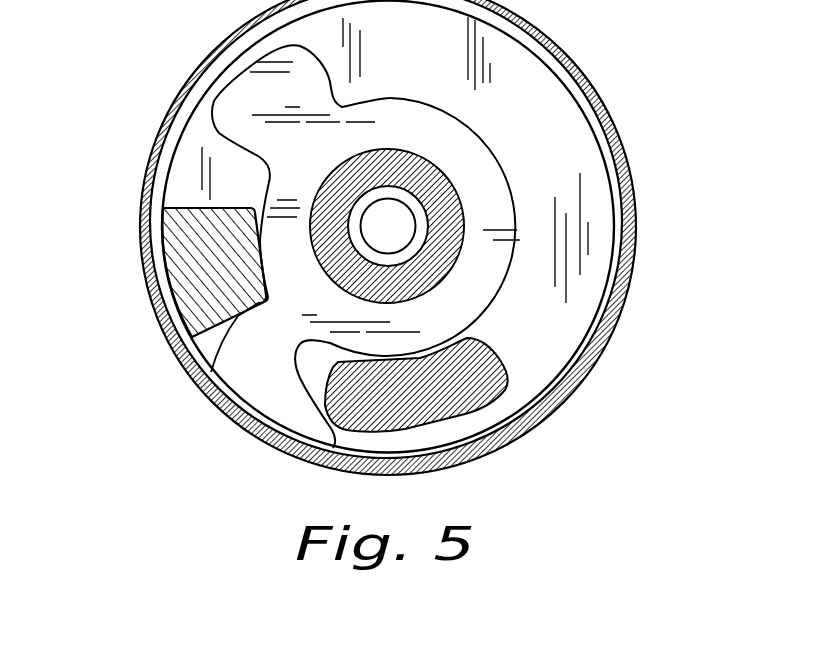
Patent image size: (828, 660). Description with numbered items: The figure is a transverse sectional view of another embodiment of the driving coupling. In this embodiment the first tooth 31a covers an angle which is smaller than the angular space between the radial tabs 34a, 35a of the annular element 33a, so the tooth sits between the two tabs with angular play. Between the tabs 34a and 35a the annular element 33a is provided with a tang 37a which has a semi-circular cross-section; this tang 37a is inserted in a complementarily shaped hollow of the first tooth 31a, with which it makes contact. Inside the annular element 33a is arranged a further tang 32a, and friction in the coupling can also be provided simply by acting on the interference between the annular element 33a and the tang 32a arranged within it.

The first tooth 31a is at (183, 293).
The tang 32a is at (433, 272).
The annular element 33a is at (487, 177).
The radial tab 34a is at (237, 354).
The radial tab 35a is at (228, 115).
The tang 37a is at (242, 192).